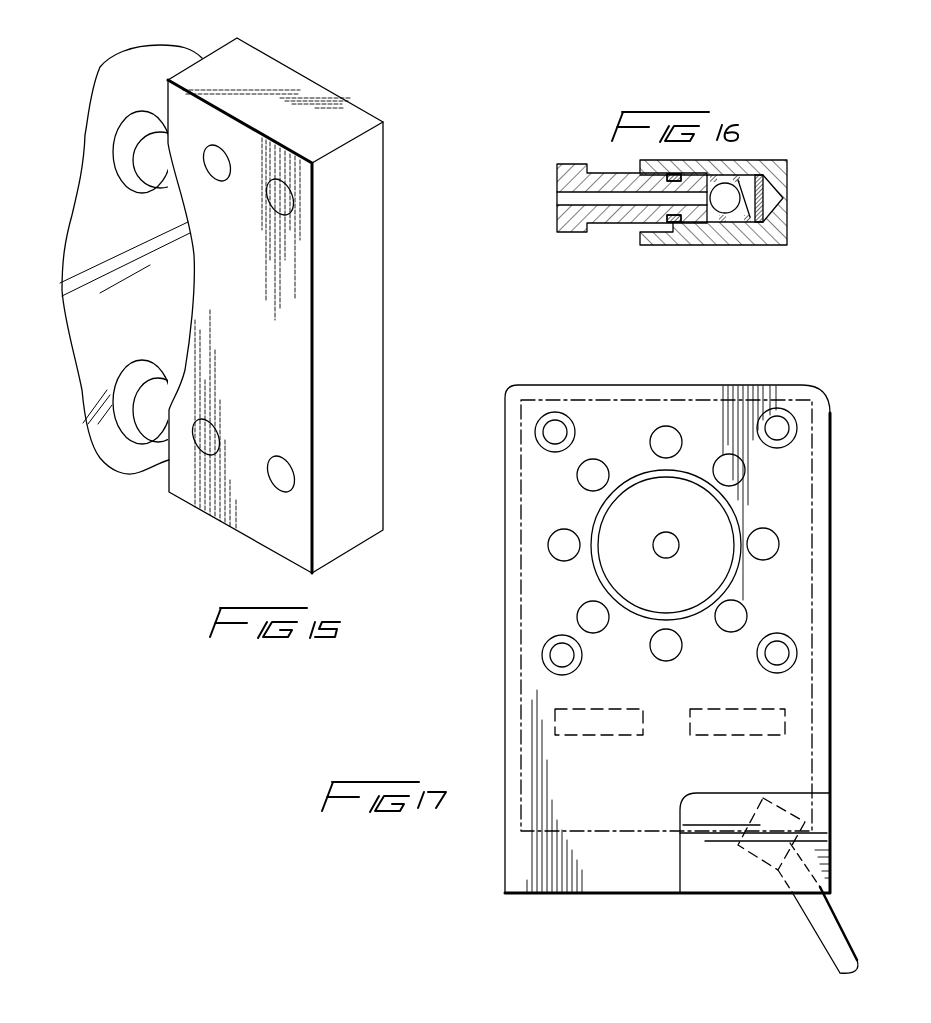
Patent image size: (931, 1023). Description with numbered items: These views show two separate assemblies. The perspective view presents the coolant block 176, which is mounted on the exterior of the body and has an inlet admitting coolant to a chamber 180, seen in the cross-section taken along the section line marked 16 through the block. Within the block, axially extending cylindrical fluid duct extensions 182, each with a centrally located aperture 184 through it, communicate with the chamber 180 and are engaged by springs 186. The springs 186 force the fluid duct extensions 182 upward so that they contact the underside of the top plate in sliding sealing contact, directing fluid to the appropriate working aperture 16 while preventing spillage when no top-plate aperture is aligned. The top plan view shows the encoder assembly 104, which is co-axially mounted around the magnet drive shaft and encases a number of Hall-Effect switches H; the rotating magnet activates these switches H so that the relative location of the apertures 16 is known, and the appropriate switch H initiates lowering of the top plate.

In FIG. 17, the encoder assembly 104 is at (822, 468).
In FIG. 15, the coolant block 176 is at (372, 362).
In FIG. 16, the chamber 180 is at (745, 178).
In FIG. 15, the fluid duct extensions 182 is at (151, 120).
In FIG. 16, the apertures 184 is at (603, 200).
In FIG. 16, the springs 186 is at (720, 175).
In FIG. 17, the Hall-Effect switches H is at (764, 536).
In FIG. 15, the apertures 16 is at (422, 204).